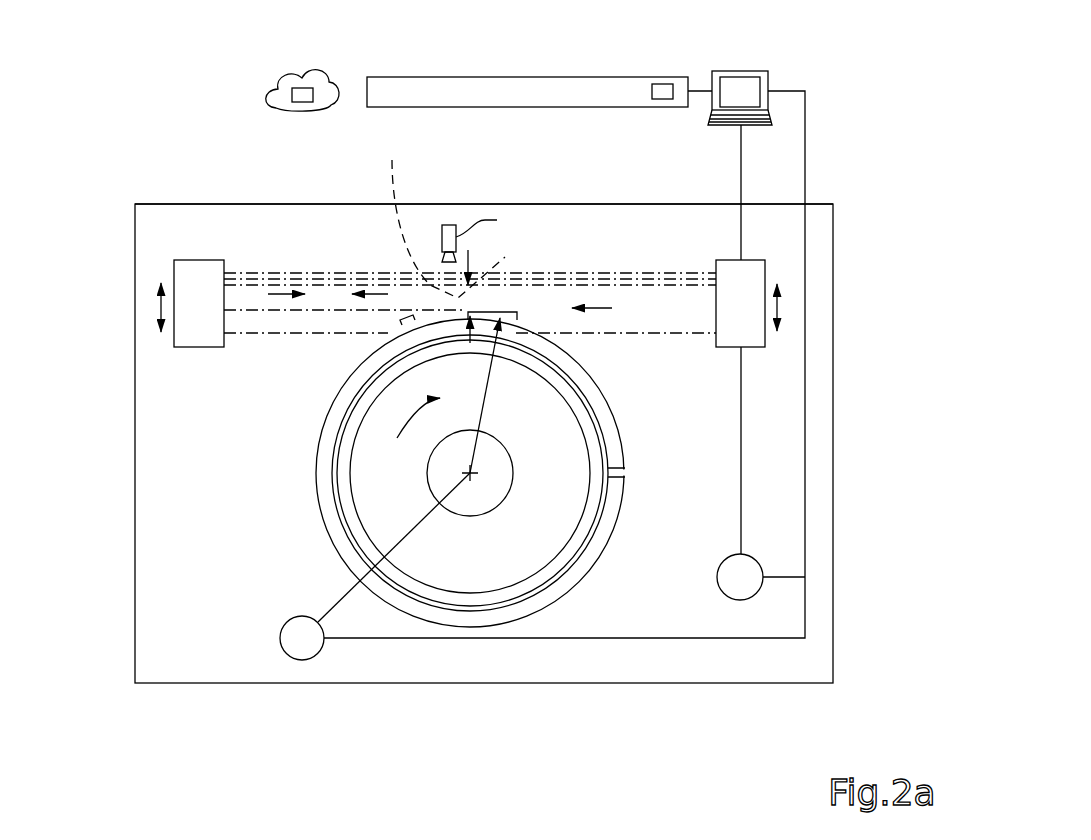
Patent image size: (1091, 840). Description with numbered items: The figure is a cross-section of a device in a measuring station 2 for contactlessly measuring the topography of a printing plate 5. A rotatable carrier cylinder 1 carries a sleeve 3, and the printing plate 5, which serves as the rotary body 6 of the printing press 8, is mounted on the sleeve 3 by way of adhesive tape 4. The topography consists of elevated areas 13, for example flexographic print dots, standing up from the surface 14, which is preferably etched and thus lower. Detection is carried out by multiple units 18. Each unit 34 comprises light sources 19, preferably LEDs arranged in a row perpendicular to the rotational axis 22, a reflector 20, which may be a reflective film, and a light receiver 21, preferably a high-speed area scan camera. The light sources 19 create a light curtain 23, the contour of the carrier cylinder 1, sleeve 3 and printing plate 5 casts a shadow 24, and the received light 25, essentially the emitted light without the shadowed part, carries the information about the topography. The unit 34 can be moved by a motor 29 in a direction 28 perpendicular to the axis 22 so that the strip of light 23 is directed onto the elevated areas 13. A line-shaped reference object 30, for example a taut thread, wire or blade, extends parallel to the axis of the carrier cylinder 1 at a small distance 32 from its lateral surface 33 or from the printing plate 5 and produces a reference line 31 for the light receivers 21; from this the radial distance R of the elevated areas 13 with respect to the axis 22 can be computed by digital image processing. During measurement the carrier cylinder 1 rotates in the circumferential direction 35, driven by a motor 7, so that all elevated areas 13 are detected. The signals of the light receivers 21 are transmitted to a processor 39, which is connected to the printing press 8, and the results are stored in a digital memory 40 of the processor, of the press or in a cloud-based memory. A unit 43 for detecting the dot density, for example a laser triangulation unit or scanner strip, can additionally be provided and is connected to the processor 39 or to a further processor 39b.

The carrier cylinder 1 is at (410, 558).
The measuring station 2 is at (742, 684).
The sleeve 3 is at (433, 593).
The adhesive tape 4 is at (600, 520).
The printing plate 5 is at (470, 544).
The rotary body 6 is at (558, 590).
The drive motor 7 is at (302, 660).
The printing press 8 is at (408, 88).
The elevated areas 13 is at (398, 333).
The surface 14 is at (593, 567).
The units 18 is at (853, 483).
The light sources 19 is at (827, 337).
The light receiver 21 is at (752, 335).
The reflector 20 is at (200, 278).
The rotational axis 22 is at (470, 475).
The light curtain 23 is at (378, 290).
The shadow 24 is at (248, 323).
The received light 25 is at (277, 293).
The direction 28 is at (782, 305).
The motor 29 is at (760, 588).
The reference object 30 is at (480, 280).
The reference line 31 is at (660, 278).
The distance 32 is at (472, 258).
The lateral surface 33 is at (333, 470).
The unit 34 is at (853, 237).
The circumferential direction 35 is at (410, 418).
The processor 39 is at (716, 71).
The further processor 39b is at (726, 70).
The digital memory 40 is at (298, 86).
The unit for detecting the dot density 43 is at (442, 240).
The radial distance R is at (497, 387).